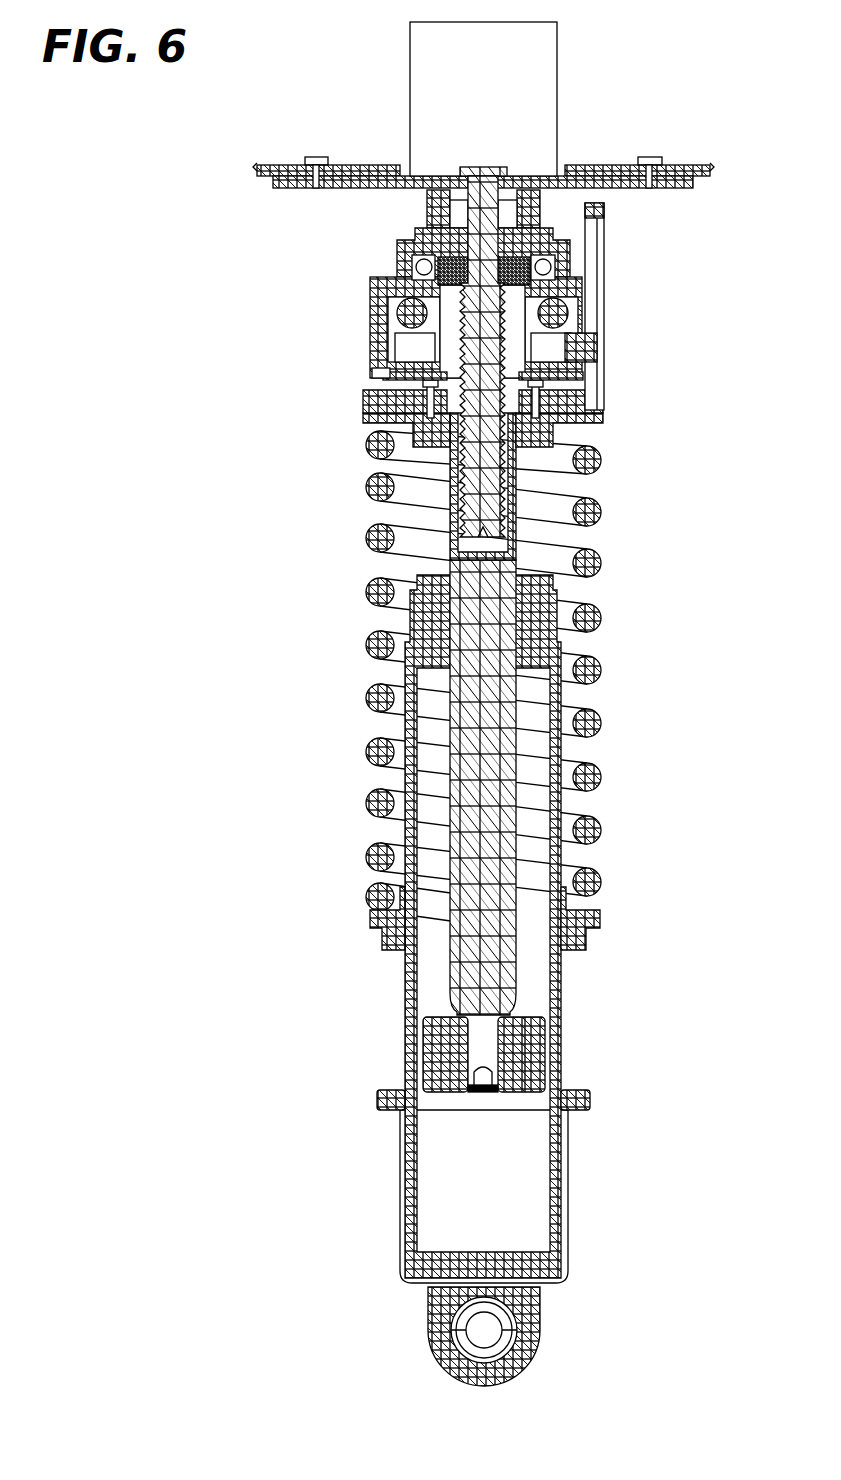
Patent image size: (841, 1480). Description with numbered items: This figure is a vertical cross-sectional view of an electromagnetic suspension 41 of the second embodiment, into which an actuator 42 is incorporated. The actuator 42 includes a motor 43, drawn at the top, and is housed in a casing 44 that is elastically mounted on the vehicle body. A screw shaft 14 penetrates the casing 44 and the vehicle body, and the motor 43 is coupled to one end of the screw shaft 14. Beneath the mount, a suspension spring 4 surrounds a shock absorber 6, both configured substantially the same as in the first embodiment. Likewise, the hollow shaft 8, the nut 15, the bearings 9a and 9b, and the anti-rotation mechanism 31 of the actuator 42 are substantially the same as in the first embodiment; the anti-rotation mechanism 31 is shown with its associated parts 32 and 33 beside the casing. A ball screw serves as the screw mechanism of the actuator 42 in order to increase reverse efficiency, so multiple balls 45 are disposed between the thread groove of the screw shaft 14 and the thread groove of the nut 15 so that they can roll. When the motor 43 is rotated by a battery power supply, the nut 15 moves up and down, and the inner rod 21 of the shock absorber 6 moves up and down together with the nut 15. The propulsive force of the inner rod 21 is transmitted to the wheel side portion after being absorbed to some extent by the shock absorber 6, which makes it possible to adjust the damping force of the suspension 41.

The suspension spring 4 is at (366, 600).
The shock absorber 6 is at (374, 1022).
The hollow shaft 8 is at (395, 346).
The bearing 9a is at (580, 271).
The bearing 9b is at (590, 318).
The screw shaft 14 is at (363, 400).
The nut 15 is at (375, 320).
The inner rod 21 is at (472, 773).
The anti-rotation mechanism 31 is at (690, 338).
The sensor magnet 32 is at (600, 348).
The sensor substrate 33 is at (605, 403).
The suspension 41 is at (182, 659).
The actuator 42 is at (352, 298).
The motor 43 is at (425, 97).
The casing 44 is at (400, 245).
The balls 45 is at (372, 380).